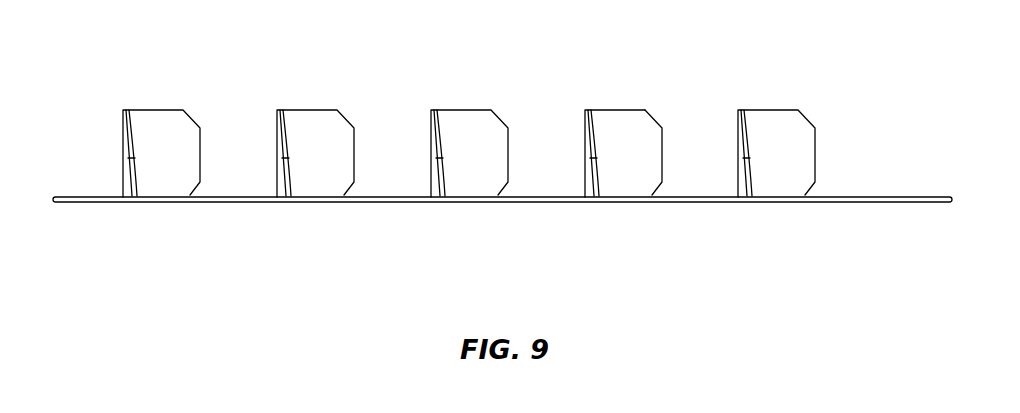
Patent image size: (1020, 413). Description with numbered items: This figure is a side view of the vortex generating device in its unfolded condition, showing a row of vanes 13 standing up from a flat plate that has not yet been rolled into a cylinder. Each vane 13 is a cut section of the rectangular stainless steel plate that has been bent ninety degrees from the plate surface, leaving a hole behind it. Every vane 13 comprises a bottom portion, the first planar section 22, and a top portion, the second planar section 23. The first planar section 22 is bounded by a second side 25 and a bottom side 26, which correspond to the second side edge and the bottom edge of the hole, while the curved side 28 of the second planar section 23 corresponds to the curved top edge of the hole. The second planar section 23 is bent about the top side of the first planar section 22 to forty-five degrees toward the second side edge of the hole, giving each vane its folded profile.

The vane 13 is at (321, 120).
The first planar section 22 is at (467, 135).
The second planar section 23 is at (433, 160).
The second side of first planar section 25 is at (423, 126).
The bottom side of first planar section 26 is at (662, 152).
The curved side of second planar section 28 is at (281, 112).